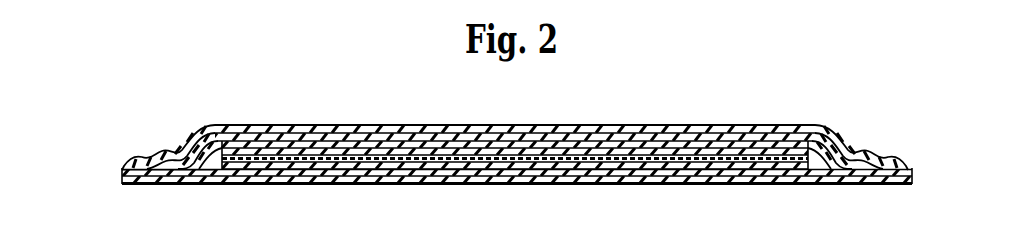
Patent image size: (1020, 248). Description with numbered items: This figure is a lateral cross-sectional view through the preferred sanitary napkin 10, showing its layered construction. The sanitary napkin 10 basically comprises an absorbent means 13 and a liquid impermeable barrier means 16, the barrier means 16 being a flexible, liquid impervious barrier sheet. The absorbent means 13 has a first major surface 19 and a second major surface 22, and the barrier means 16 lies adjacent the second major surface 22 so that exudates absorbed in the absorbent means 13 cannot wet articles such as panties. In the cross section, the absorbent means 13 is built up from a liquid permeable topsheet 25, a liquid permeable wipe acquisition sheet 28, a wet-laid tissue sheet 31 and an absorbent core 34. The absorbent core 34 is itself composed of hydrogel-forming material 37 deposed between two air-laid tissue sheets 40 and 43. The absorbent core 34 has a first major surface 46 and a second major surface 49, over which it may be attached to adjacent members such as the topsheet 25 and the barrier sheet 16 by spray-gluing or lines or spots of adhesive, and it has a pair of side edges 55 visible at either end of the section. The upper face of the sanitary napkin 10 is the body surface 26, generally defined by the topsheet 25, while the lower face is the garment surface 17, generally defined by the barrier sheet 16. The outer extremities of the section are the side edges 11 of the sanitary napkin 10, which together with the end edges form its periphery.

The sanitary napkin 10 is at (820, 88).
The side edges 11 is at (123, 173).
The absorbent means 13 is at (143, 120).
The barrier means 16 is at (316, 179).
The garment surface 17 is at (558, 181).
The first major surface 19 is at (233, 125).
The second major surface 22 is at (262, 179).
The liquid permeable topsheet 25 is at (290, 130).
The body surface 26 is at (690, 126).
The liquid permeable wipe acquisition sheet 28 is at (346, 138).
The wet-laid tissue sheet 31 is at (395, 142).
The absorbent core 34 is at (440, 147).
The hydrogel-forming material 37 is at (516, 152).
The air-laid tissue sheet 40 is at (557, 152).
The air-laid tissue sheet 43 is at (617, 153).
The first major surface 46 is at (730, 143).
The second major surface 49 is at (657, 181).
The side edges 55 is at (830, 183).